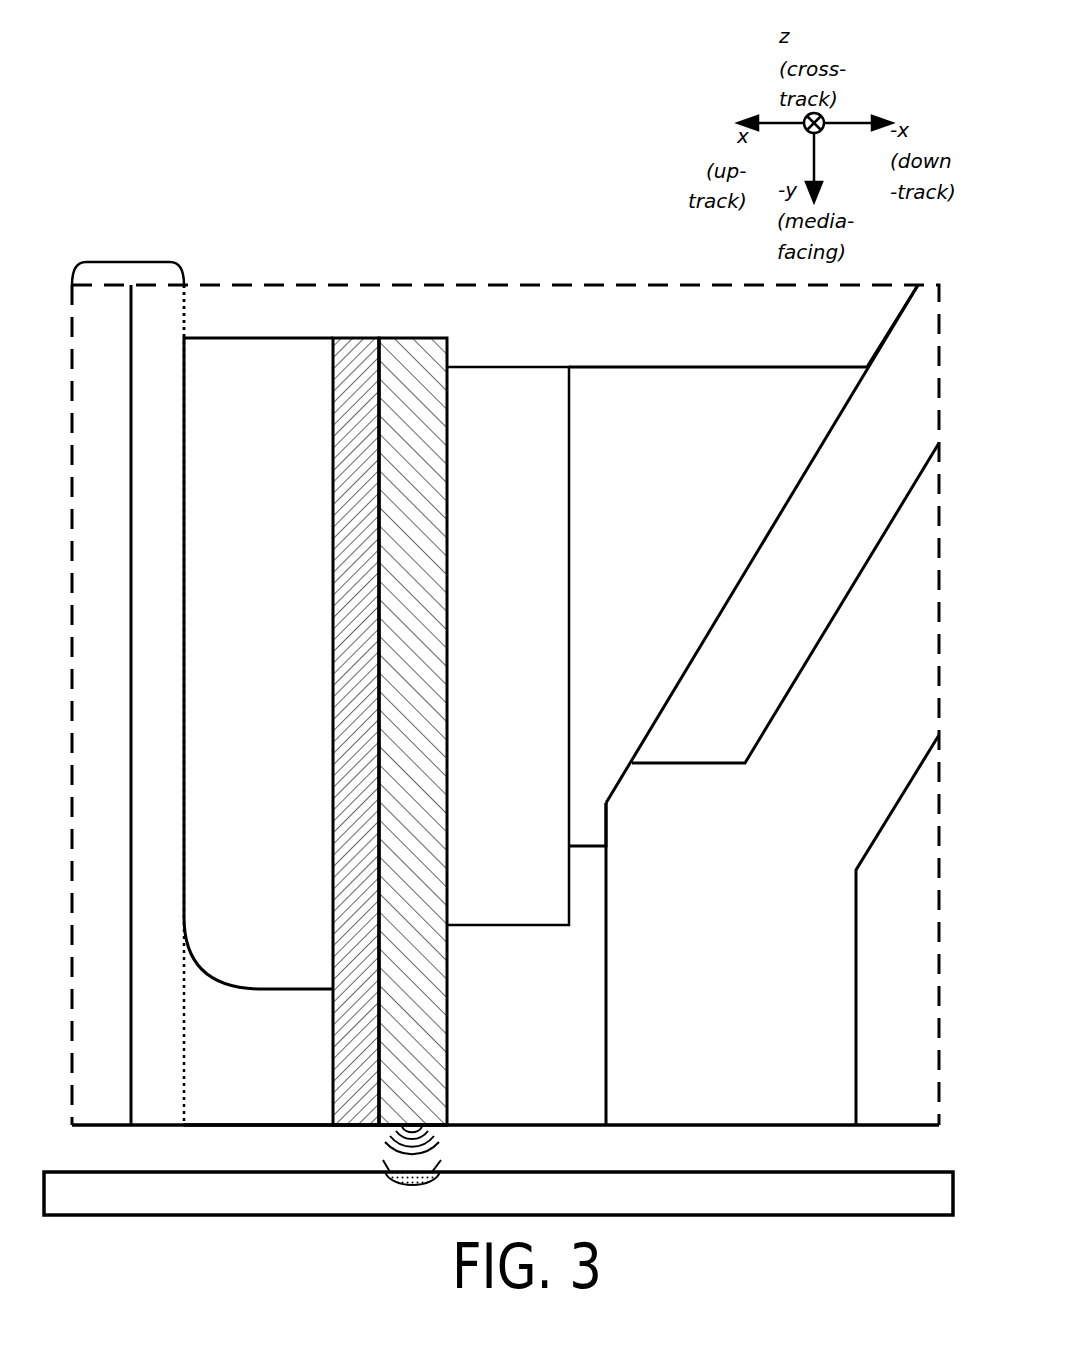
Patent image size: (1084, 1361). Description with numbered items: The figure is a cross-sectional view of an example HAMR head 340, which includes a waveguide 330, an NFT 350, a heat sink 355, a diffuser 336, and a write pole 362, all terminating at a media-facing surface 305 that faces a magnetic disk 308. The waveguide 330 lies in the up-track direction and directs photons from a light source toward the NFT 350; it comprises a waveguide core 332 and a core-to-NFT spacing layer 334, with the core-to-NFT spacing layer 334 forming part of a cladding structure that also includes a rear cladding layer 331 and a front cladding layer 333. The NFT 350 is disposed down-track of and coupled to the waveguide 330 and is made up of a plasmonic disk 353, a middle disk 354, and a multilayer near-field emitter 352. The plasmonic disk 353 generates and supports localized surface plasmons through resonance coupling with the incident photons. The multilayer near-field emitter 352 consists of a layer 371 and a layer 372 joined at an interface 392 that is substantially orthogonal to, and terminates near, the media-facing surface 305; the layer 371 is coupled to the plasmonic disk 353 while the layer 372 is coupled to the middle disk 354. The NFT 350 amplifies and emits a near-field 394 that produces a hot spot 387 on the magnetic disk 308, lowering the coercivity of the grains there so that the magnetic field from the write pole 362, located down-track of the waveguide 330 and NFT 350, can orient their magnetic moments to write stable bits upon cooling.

The media-facing surface 305 is at (203, 1126).
The magnetic disk 308 is at (109, 1211).
The waveguide 330 is at (128, 262).
The rear cladding layer 331 is at (274, 331).
The waveguide core 332 is at (126, 719).
The front cladding layer 333 is at (241, 1079).
The core-to-NFT spacing layer 334 is at (181, 719).
The diffuser 336 is at (736, 736).
The HAMR head 340 is at (486, 140).
The NFT 350 is at (479, 303).
The multilayer near-field emitter 352 is at (384, 330).
The plasmonic disk 353 is at (281, 678).
The middle disk 354 is at (529, 646).
The heat sink 355 is at (687, 559).
The write pole 362 is at (751, 1013).
The layer 371 is at (350, 772).
The layer 372 is at (427, 757).
The hot spot 387 is at (430, 1184).
The interface 392 is at (378, 498).
The near-field 394 is at (380, 1148).